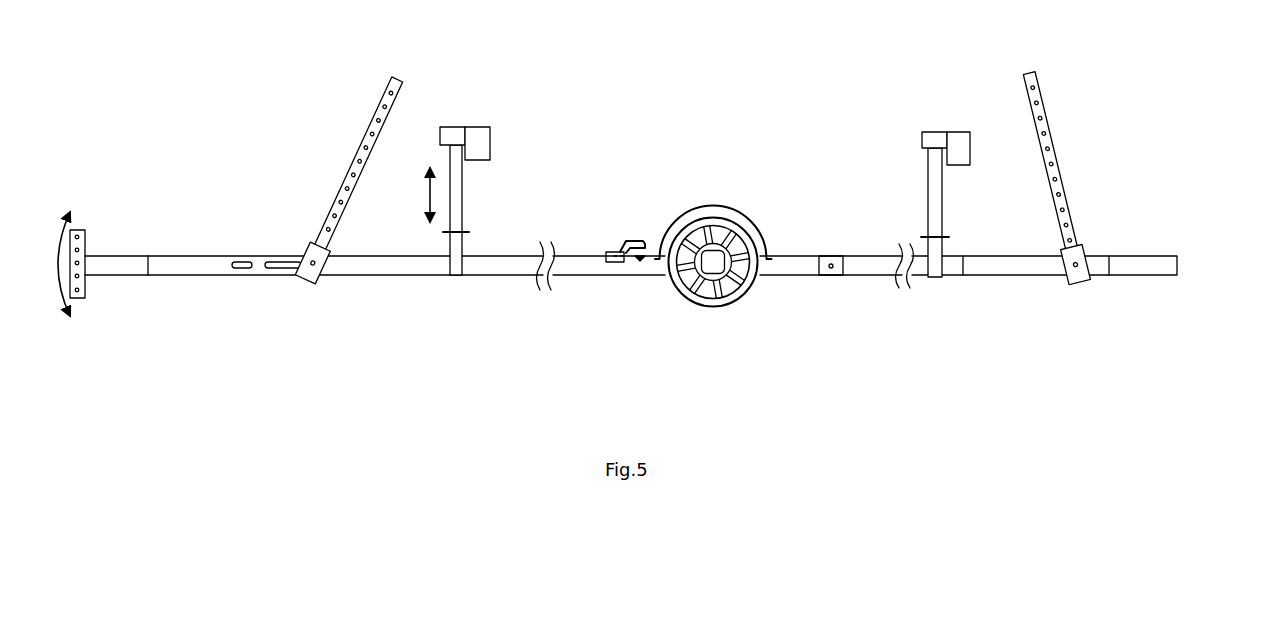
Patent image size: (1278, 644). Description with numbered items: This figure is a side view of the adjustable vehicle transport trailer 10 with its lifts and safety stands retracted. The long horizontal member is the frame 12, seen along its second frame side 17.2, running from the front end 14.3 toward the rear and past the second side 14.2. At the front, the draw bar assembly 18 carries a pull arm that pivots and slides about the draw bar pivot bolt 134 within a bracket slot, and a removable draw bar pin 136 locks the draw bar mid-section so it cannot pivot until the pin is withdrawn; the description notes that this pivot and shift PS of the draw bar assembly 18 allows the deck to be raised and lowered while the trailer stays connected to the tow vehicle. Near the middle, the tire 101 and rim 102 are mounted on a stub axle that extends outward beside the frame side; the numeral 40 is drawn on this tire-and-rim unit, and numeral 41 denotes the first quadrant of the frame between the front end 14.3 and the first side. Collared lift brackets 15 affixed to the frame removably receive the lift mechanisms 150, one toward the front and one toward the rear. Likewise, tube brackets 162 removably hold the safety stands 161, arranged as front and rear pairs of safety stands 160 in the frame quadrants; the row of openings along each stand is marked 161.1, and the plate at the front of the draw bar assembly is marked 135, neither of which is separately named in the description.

The adjustable vehicle transport trailer 10 is at (797, 232).
The frame 12 is at (631, 285).
The second side 14.2 is at (716, 304).
The front end 14.3 is at (314, 282).
The collared lift bracket 15 is at (458, 243).
The second frame side 17.2 is at (625, 251).
The draw bar assembly 18 is at (119, 235).
The wheel assembly 40 is at (714, 246).
The first quadrant 41 is at (715, 207).
The tire 101 is at (728, 309).
The rim 102 is at (683, 287).
The draw bar pivot bolt 134 is at (245, 268).
The end plate 135 is at (78, 228).
The draw bar pin 136 is at (150, 265).
The lift mechanisms 150 is at (709, 177).
The pair of safety stands 160 is at (677, 208).
The safety stand 161 is at (689, 151).
The adjustment holes 161.1 is at (388, 92).
The tube bracket 162 is at (318, 272).
The pivot and shift PS is at (84, 298).